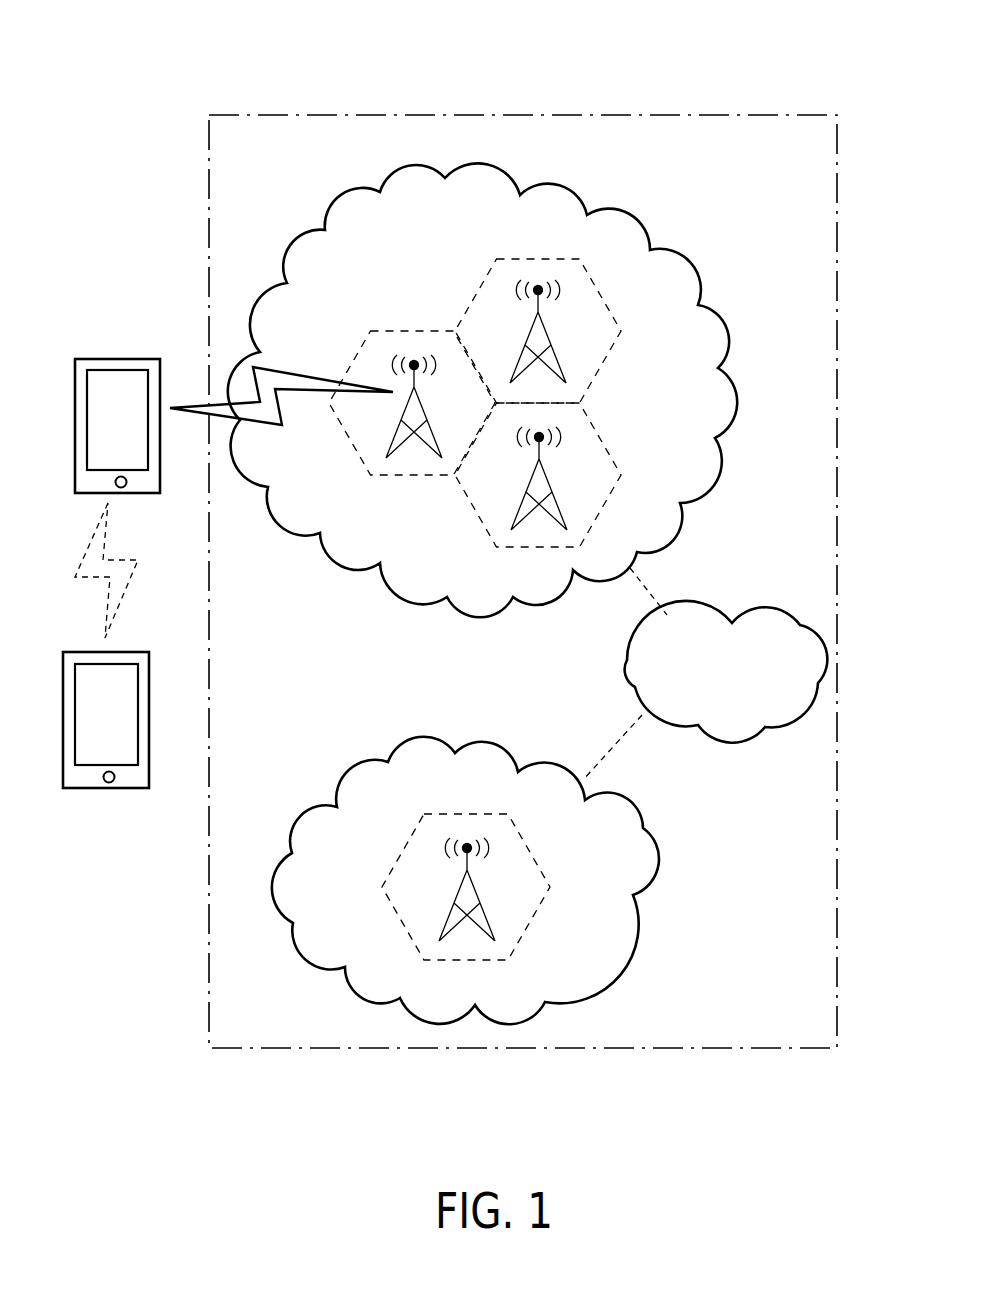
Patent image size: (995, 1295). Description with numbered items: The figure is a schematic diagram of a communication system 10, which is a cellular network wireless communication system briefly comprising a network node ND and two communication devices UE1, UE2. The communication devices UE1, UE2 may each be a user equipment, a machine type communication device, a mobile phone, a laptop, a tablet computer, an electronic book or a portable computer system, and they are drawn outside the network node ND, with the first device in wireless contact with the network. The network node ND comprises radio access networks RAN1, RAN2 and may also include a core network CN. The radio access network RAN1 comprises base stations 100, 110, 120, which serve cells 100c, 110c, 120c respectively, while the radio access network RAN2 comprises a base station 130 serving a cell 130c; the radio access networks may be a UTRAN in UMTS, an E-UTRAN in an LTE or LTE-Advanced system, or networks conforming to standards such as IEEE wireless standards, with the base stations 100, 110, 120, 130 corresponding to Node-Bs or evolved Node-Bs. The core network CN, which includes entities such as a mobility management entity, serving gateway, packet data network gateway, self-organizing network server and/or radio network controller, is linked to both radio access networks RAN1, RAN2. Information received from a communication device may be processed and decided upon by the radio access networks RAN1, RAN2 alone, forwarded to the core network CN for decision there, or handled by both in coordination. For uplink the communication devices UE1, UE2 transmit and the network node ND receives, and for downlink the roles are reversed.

The communication system 10 is at (152, 66).
The network node ND is at (605, 113).
The communication device UE1 is at (90, 358).
The communication device UE2 is at (70, 652).
The radio access network RAN1 is at (642, 222).
The radio access network RAN2 is at (645, 826).
The core network CN is at (707, 602).
The base station 100 is at (436, 447).
The cell 100c is at (407, 331).
The base station 110 is at (561, 372).
The cell 110c is at (479, 290).
The base station 120 is at (560, 512).
The cell 120c is at (600, 438).
The base station 130 is at (487, 920).
The cell 130c is at (523, 840).